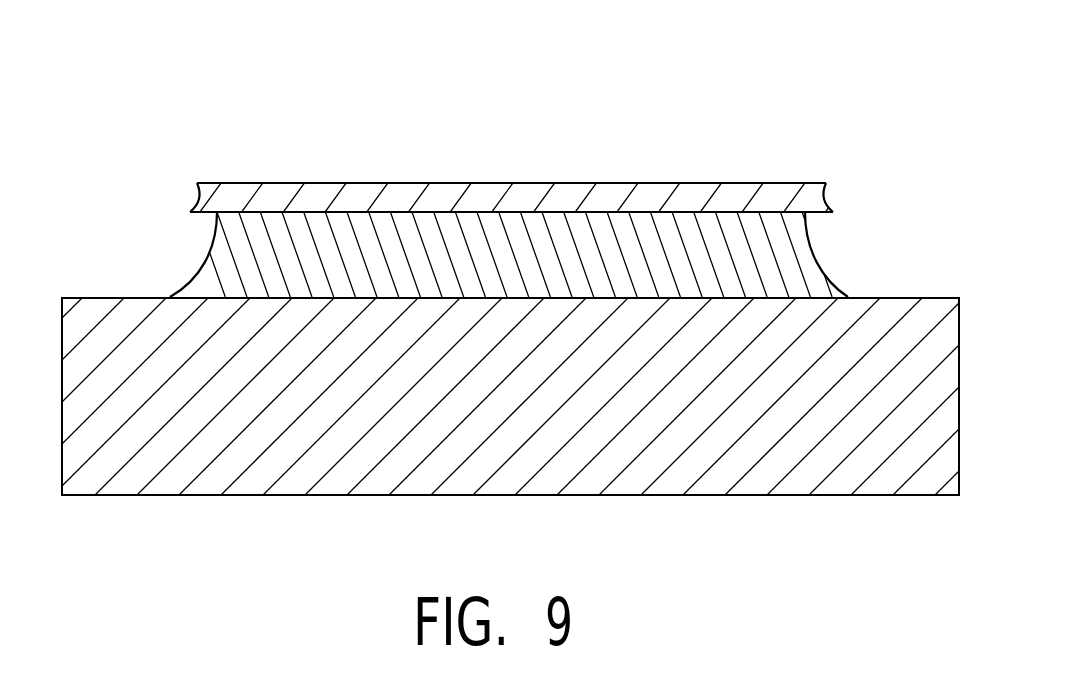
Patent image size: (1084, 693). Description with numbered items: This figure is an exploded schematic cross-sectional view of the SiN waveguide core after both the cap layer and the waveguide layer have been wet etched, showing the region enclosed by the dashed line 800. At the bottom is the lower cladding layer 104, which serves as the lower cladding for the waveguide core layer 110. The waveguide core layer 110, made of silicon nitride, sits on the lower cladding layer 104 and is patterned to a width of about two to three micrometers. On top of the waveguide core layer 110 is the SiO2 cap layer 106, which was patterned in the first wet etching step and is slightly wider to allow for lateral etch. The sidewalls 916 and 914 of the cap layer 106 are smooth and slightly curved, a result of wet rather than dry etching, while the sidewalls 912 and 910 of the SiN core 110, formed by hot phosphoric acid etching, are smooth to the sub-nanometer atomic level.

The dashed line region 800 is at (808, 55).
The lower cladding layer 104 is at (163, 486).
The waveguide core layer 110 is at (238, 268).
The cap layer 106 is at (495, 183).
The sidewall of SiN core 912 is at (212, 250).
The sidewall of SiN core 910 is at (812, 250).
The sidewall of cap layer 916 is at (194, 199).
The sidewall of cap layer 914 is at (830, 199).